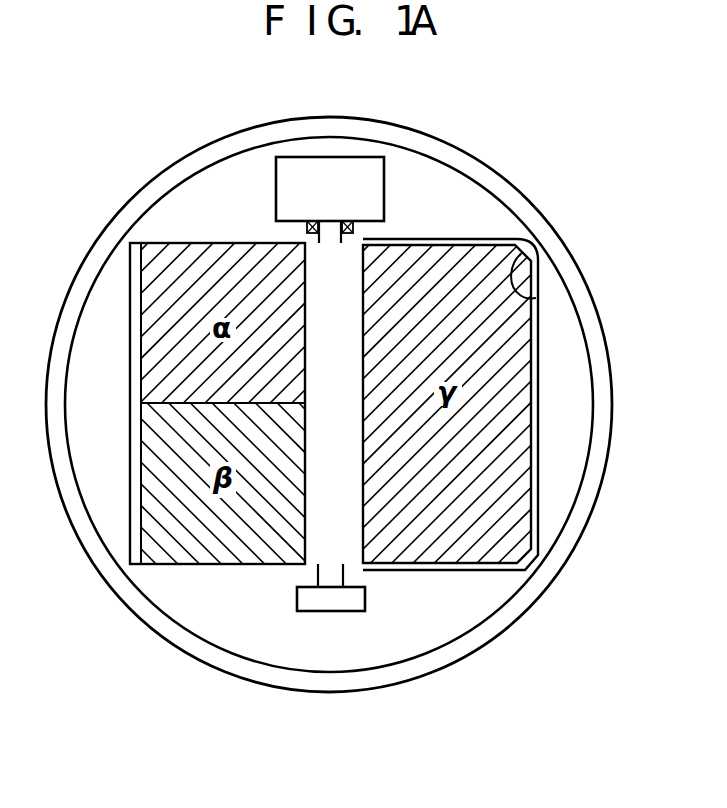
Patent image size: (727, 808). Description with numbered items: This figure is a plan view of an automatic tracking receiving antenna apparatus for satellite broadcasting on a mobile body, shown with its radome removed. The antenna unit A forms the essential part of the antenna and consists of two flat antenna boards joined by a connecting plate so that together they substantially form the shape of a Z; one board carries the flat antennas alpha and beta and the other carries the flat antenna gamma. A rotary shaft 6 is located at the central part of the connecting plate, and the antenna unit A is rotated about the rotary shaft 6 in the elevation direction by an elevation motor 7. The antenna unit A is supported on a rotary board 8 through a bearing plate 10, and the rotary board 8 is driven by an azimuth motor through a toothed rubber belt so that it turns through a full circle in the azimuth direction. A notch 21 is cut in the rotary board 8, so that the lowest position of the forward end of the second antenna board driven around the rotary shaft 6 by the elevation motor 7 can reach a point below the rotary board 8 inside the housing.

The rotary shaft 6 is at (340, 236).
The elevation motor 7 is at (368, 157).
The rotary board 8 is at (588, 354).
The bearing plate 10 is at (365, 600).
The notch 21 is at (522, 253).
The antenna unit A is at (538, 473).